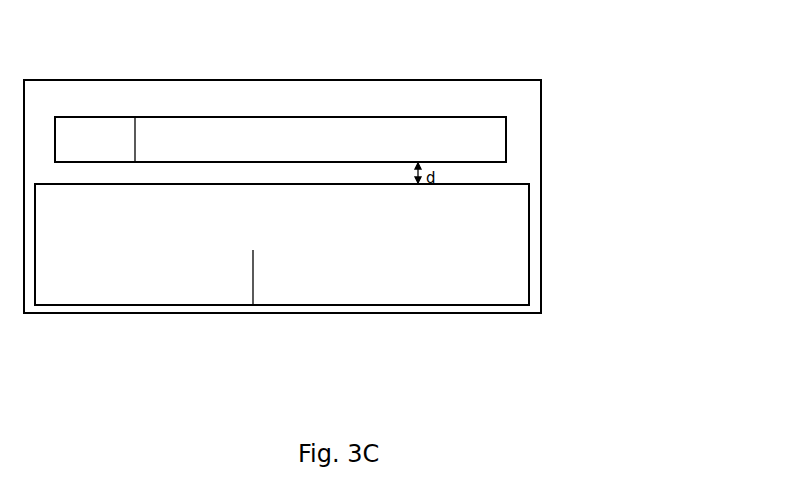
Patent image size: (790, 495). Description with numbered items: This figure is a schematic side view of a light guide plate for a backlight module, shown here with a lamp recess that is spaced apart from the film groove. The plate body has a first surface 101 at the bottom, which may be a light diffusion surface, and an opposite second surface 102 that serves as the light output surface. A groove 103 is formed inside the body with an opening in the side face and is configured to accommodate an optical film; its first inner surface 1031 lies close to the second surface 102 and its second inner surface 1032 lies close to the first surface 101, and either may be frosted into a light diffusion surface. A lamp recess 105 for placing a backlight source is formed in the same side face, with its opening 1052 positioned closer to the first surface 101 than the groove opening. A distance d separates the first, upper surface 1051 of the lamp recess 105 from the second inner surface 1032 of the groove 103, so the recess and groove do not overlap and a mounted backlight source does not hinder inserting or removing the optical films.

The first surface 101 is at (373, 313).
The second surface 102 is at (372, 80).
The groove 103 is at (255, 139).
The first inner surface of the groove 1031 is at (183, 117).
The second inner surface of the groove 1032 is at (135, 162).
The lamp recess 105 is at (529, 223).
The first surface of the lamp recess 1051 is at (512, 184).
The opening of the lamp recess 1052 is at (253, 250).